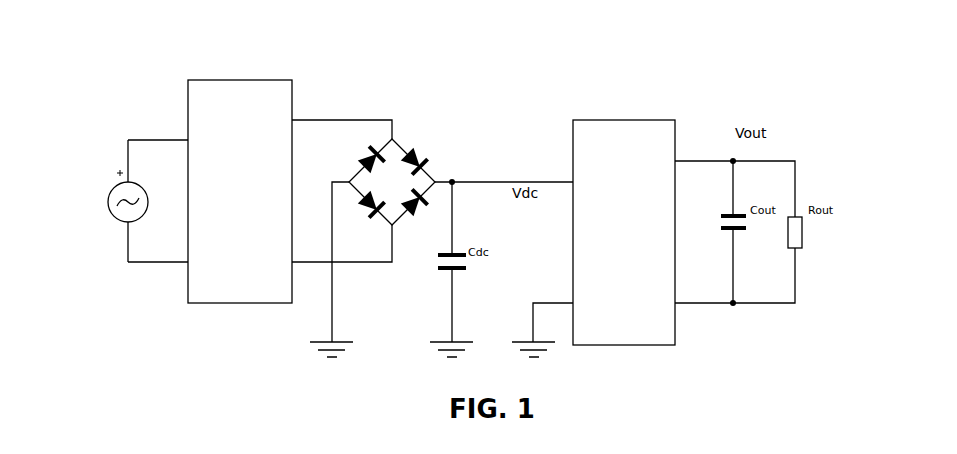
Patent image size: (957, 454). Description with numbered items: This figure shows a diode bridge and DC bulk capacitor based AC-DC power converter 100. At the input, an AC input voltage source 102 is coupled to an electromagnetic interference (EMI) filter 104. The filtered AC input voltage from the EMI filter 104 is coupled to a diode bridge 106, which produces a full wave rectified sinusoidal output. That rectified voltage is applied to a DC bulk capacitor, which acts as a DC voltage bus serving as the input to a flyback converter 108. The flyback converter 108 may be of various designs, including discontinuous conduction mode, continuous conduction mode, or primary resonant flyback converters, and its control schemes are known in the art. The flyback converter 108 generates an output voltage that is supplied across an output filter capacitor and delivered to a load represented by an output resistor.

The AC-DC power converter 100 is at (396, 46).
The AC input voltage source 102 is at (118, 219).
The electromagnetic interference (EMI) filter 104 is at (258, 79).
The diode bridge 106 is at (415, 143).
The flyback converter 108 is at (618, 120).